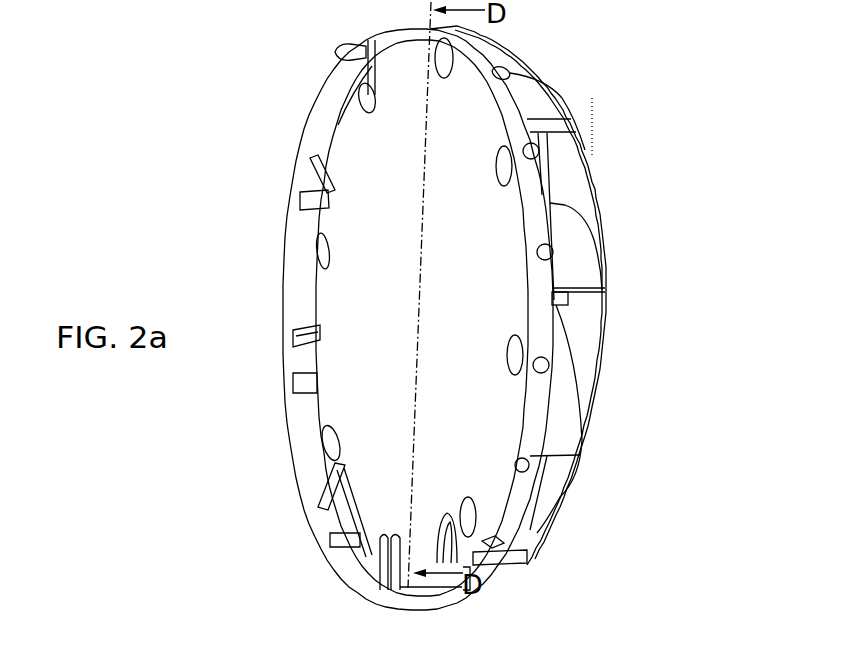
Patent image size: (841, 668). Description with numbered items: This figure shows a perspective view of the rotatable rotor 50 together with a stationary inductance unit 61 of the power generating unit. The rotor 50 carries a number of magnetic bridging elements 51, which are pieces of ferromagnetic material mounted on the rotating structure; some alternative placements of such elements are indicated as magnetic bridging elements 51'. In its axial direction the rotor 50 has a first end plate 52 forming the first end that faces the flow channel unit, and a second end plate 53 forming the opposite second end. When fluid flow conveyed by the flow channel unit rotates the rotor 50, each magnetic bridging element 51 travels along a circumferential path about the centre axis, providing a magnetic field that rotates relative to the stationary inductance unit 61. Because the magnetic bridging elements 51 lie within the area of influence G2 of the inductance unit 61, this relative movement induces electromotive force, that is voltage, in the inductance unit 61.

The rotor 50 is at (611, 218).
The magnetic bridging element 51 is at (375, 315).
The magnetic bridging element (alternative placement) 51' is at (494, 287).
The first end plate 52 is at (597, 327).
The second end plate 53 is at (378, 309).
The inductance unit 61 is at (523, 558).
The area of influence G2 is at (503, 545).